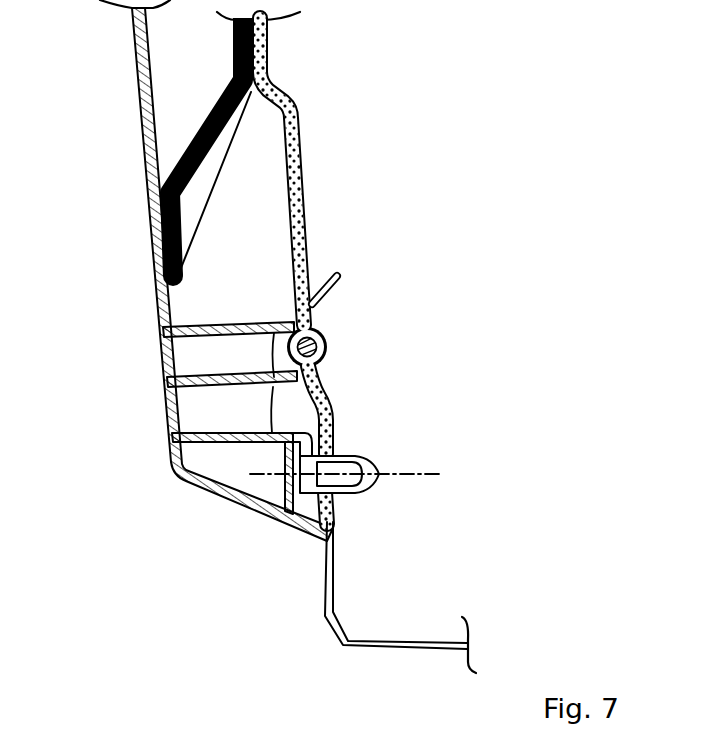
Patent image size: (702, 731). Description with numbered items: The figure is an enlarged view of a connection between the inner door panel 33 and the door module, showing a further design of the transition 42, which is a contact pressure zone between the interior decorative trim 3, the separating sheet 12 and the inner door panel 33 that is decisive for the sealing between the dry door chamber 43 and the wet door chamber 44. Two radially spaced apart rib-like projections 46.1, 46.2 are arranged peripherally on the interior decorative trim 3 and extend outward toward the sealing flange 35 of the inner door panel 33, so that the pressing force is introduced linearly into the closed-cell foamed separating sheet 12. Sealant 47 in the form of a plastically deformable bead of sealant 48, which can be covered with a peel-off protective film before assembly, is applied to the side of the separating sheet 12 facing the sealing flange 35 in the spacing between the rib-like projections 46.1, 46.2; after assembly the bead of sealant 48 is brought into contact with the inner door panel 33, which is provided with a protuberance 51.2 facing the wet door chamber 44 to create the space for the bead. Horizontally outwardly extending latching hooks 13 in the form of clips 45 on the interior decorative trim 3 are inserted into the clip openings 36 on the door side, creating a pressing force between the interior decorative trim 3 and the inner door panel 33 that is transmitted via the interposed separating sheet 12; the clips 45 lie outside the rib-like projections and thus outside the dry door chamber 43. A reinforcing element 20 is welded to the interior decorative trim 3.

The interior decorative trim part 3 is at (140, 158).
The separating sheet 12 is at (303, 183).
The latching hooks 13 is at (389, 445).
The reinforcing element 20 is at (206, 120).
The inner door panel 33 is at (333, 389).
The sealing flange 35 is at (326, 302).
The clip openings 36 is at (340, 493).
The transition 42 is at (418, 338).
The dry door chamber 43 is at (265, 250).
The wet door chamber 44 is at (402, 103).
The clips 45 is at (288, 478).
The rib-like projection 46.1 is at (208, 392).
The rib-like projection 46.2 is at (205, 337).
The sealant 47 is at (402, 359).
The bead of sealant 48 is at (327, 333).
The protuberance 51.2 is at (327, 351).